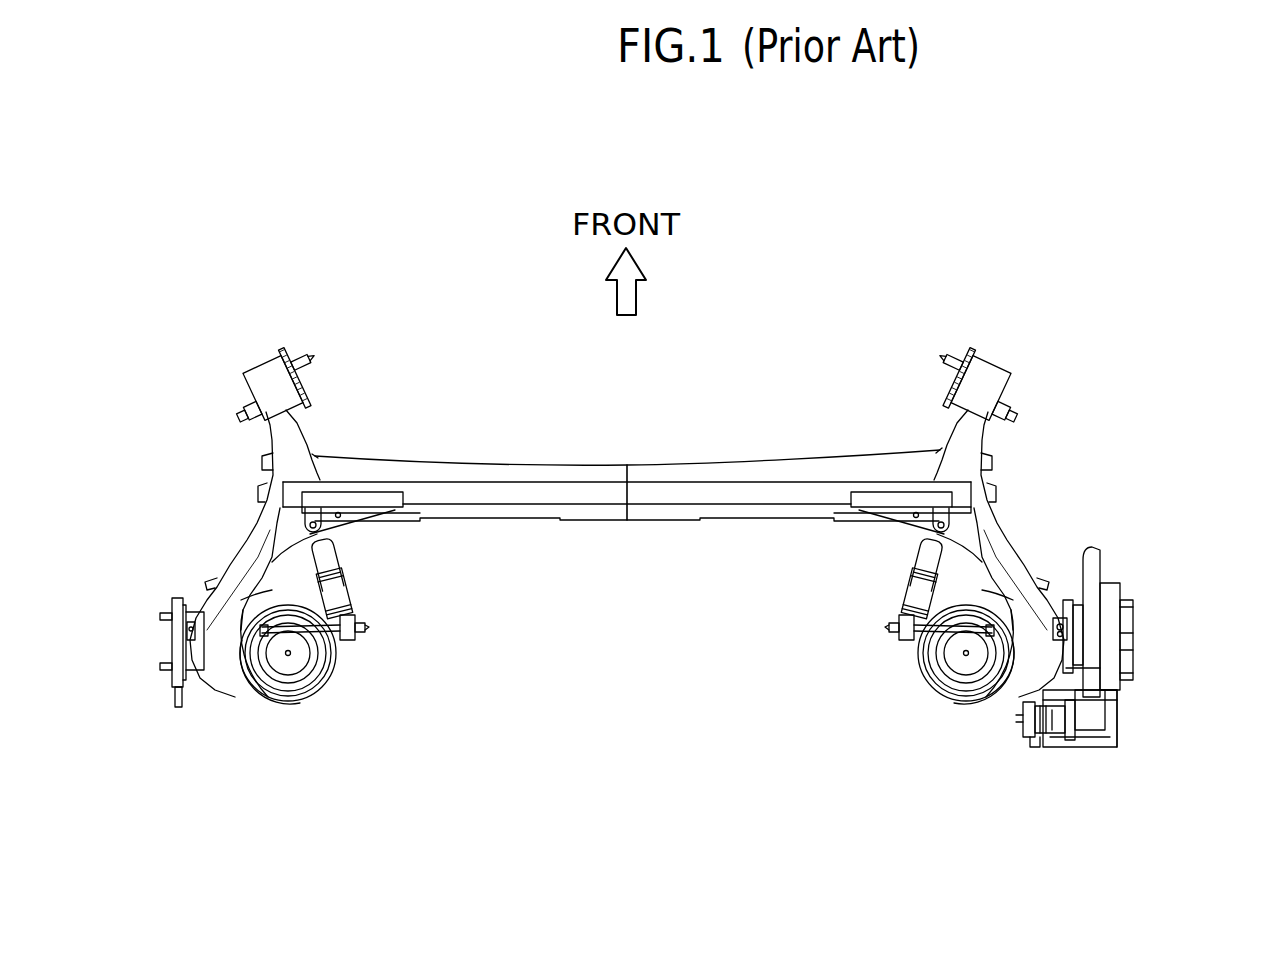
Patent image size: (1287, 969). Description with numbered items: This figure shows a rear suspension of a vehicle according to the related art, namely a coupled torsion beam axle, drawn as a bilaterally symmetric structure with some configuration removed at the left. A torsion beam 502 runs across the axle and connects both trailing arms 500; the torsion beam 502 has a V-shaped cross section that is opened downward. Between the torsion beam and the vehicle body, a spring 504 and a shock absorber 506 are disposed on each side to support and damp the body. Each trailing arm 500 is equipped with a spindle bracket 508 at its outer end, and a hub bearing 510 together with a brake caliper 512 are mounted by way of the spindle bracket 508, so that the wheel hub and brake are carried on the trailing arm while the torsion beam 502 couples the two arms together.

The trailing arm 500 is at (259, 528).
The torsion beam 502 is at (661, 473).
The spring 504 is at (302, 699).
The shock absorber 506 is at (346, 588).
The spindle bracket 508 is at (175, 710).
The hub bearing 510 is at (1133, 634).
The brake caliper 512 is at (1087, 747).